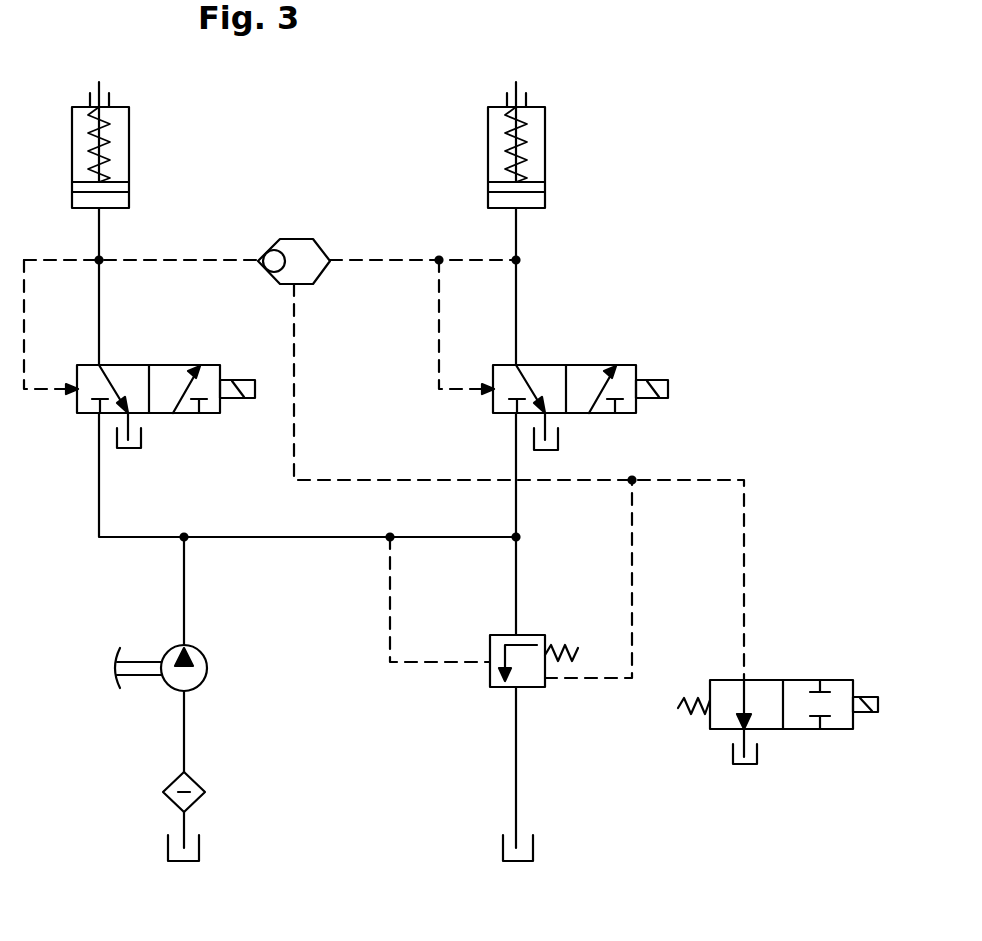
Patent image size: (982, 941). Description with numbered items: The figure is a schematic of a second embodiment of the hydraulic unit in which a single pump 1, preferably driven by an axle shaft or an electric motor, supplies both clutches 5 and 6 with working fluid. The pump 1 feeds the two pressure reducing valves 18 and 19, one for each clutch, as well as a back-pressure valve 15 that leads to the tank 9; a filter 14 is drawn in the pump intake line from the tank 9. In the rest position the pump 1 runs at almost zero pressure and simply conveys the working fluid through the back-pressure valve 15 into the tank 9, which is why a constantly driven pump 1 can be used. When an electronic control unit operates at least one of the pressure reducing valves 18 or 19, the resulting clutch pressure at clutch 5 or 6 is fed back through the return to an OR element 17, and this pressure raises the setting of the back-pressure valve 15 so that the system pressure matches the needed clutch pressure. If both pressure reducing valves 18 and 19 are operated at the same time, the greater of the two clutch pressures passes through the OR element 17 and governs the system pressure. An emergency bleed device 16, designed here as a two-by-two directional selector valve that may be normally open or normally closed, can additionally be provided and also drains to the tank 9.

The pump 1 is at (192, 677).
The clutch 5 is at (535, 140).
The clutch 6 is at (118, 140).
The tank 9 is at (137, 450).
The filter 14 is at (170, 800).
The back-pressure valve 15 is at (530, 678).
The emergency bleed device 16 is at (797, 690).
The OR element 17 is at (300, 250).
The pressure reducing valve 18 is at (584, 378).
The pressure reducing valve 19 is at (170, 378).